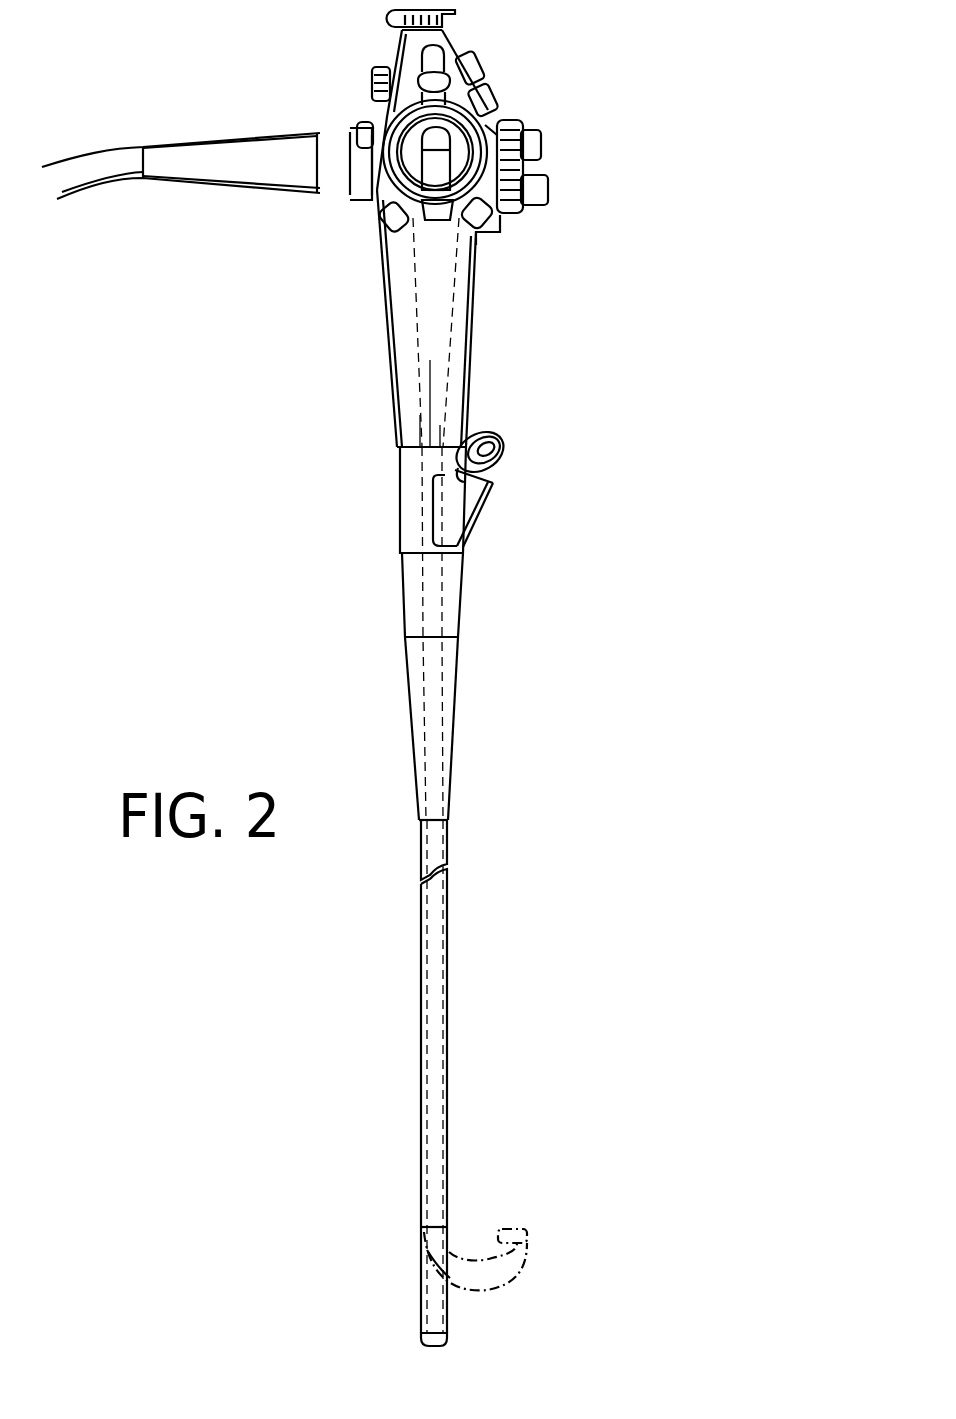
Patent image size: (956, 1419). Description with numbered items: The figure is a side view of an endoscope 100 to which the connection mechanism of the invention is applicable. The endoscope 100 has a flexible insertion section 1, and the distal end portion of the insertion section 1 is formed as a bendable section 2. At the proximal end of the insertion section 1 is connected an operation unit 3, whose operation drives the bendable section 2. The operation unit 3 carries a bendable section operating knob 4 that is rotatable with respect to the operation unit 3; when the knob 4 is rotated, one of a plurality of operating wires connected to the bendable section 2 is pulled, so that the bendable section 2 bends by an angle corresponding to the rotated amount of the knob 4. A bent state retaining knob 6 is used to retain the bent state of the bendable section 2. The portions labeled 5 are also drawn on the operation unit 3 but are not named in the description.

The endoscope 100 is at (577, 427).
The flexible insertion section 1 is at (419, 1067).
The bendable section 2 is at (423, 1281).
The operation unit 3 is at (386, 324).
The bendable section operating knob 4 is at (506, 136).
The grip portion 5 is at (422, 607).
The bent state retaining knob 6 is at (458, 148).